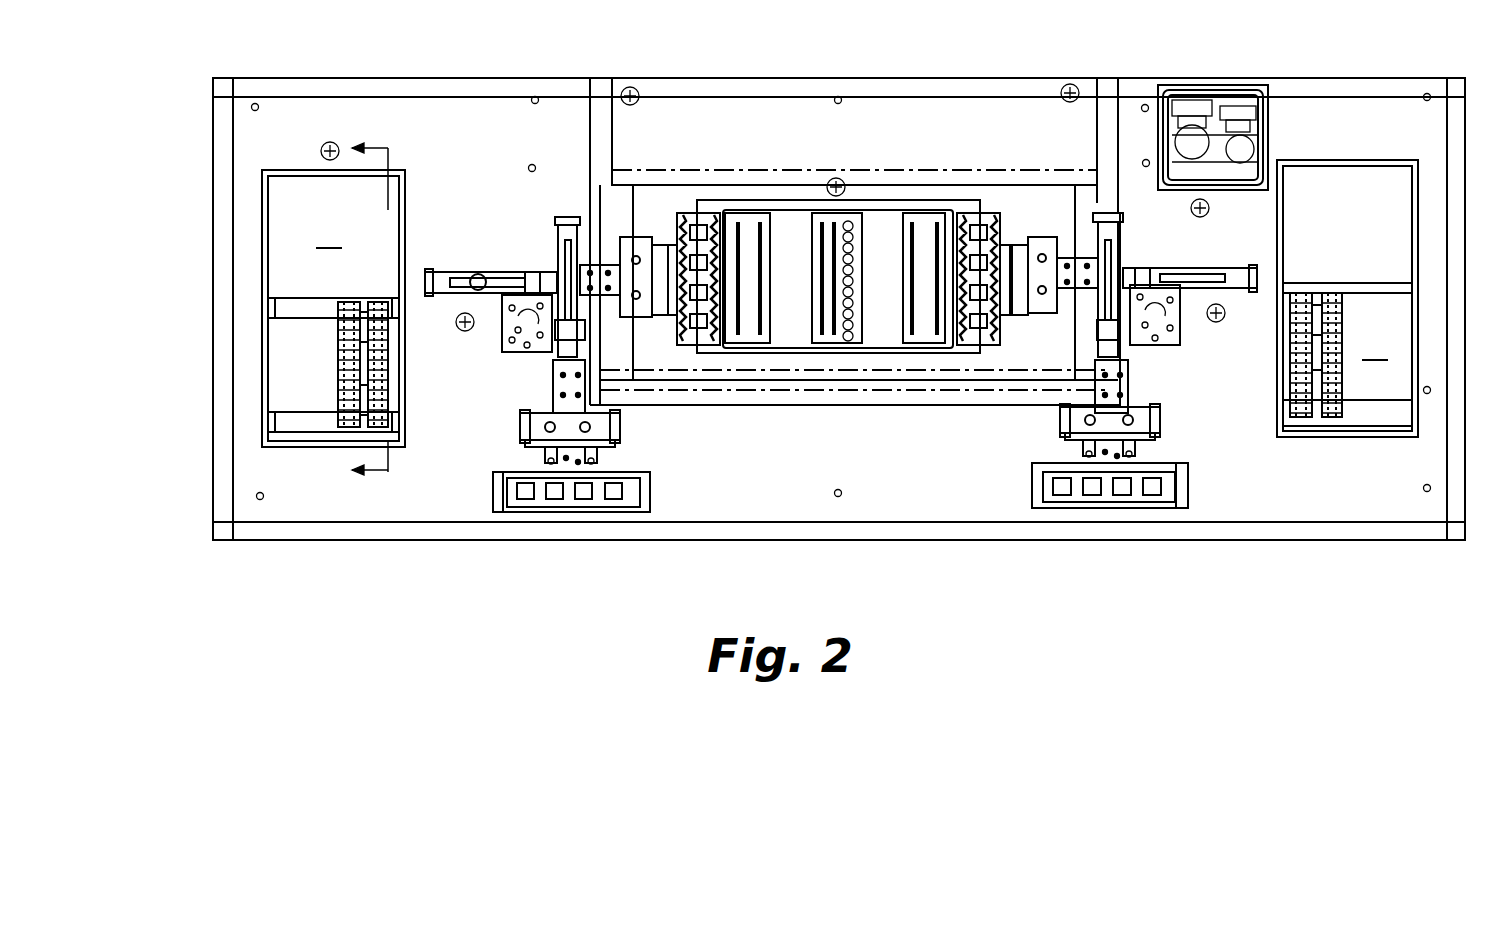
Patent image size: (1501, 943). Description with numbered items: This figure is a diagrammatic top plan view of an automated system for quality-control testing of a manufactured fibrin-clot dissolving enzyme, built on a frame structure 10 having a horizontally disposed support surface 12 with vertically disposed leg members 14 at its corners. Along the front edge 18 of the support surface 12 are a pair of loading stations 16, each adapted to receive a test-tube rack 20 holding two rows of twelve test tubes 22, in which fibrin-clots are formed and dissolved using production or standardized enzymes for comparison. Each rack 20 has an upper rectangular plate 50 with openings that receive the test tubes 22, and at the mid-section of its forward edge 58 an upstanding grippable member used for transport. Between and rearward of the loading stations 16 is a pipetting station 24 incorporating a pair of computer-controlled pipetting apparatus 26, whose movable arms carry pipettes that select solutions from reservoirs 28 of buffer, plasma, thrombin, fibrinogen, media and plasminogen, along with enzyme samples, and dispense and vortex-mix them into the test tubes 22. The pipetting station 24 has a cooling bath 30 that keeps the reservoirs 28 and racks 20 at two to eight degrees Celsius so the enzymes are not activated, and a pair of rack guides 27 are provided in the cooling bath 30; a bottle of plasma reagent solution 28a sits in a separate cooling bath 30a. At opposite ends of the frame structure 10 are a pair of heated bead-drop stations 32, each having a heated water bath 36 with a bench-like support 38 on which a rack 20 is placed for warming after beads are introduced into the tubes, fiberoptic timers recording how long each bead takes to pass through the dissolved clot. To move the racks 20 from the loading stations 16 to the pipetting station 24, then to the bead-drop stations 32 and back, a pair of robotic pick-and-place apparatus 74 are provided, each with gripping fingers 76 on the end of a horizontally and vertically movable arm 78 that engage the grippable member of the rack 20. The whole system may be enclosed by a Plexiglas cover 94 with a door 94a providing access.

The frame structure 10 is at (765, 62).
The support surface 12 is at (713, 494).
The leg members 14 is at (213, 88).
The loading stations 16 is at (493, 492).
The front edge 18 is at (1000, 540).
The test-tube rack 20 is at (1003, 230).
The test tubes 22 is at (680, 230).
The pipetting station 24 is at (740, 170).
The pipetting apparatus 26 is at (640, 178).
The rack guides 27 is at (763, 345).
The reservoirs 28 is at (853, 282).
The bottle of plasma reagent solution 28a is at (1242, 149).
The cooling bath 30 is at (838, 282).
The cooling bath 30a is at (1267, 103).
The heated bead-drop stations 32 is at (840, 319).
The heated water bath 36 is at (852, 295).
The bench-like support 38 is at (338, 388).
The upper rectangular plate 50 is at (828, 228).
The forward edge 58 is at (650, 258).
The robotic pick-and-place apparatus 74 is at (558, 236).
The gripping fingers 76 is at (1003, 235).
The arm 78 is at (556, 370).
The Plexiglas cover 94 is at (450, 78).
The door 94a is at (568, 540).